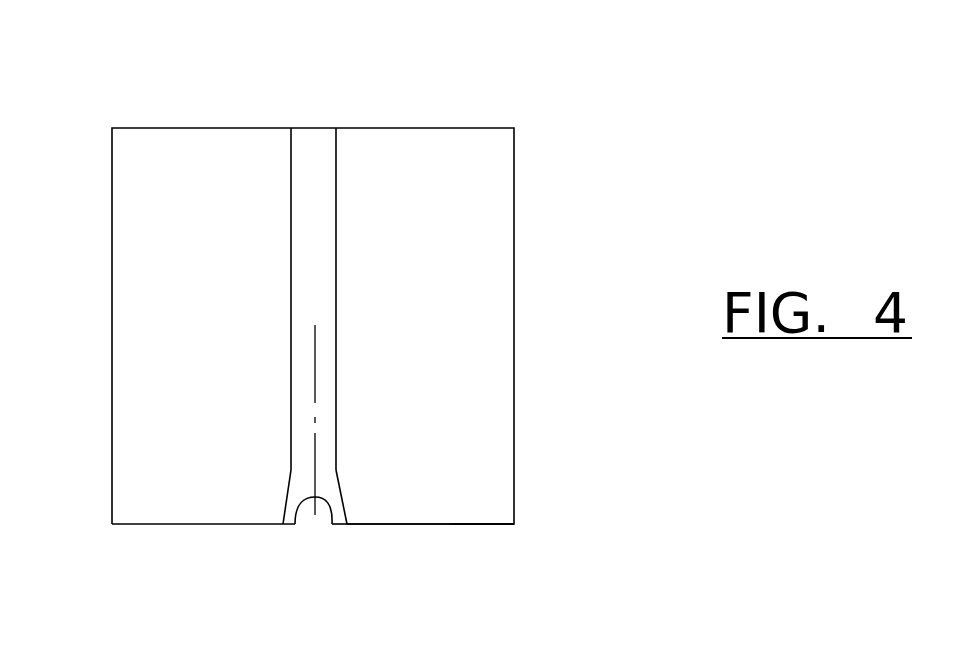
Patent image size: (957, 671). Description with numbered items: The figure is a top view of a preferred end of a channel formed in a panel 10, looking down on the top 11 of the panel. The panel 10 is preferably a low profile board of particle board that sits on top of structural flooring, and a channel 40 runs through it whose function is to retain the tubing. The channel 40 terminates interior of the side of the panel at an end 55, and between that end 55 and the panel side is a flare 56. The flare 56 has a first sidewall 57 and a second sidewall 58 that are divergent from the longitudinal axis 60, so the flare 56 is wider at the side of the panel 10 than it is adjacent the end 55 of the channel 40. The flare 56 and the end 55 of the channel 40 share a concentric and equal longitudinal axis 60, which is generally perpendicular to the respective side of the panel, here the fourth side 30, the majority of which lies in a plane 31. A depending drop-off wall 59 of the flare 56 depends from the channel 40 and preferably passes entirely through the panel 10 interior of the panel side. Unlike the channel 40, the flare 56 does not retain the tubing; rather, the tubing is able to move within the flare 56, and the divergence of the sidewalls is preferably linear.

The panel 10 is at (514, 213).
The top 11 is at (495, 278).
The channel 40 is at (318, 162).
The longitudinal axis 60 is at (315, 403).
The end of the channel 55 is at (292, 435).
The flare 56 is at (342, 497).
The first sidewall 57 is at (285, 503).
The second sidewall 58 is at (345, 512).
The depending drop-off wall 59 is at (297, 500).
The fourth side 30 is at (487, 524).
The plane 31 is at (440, 524).